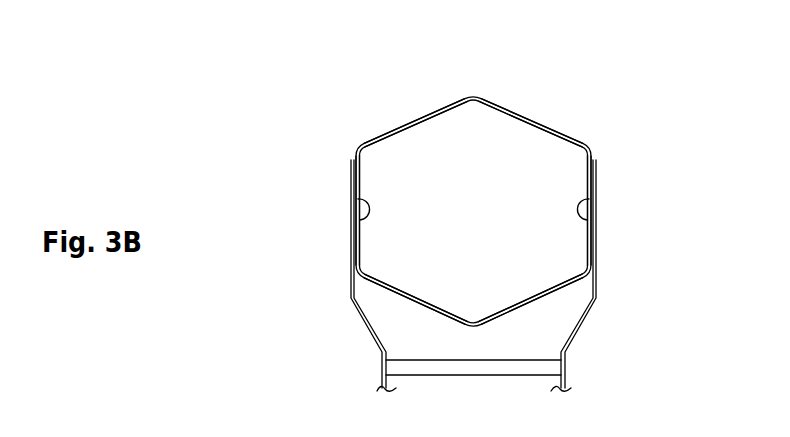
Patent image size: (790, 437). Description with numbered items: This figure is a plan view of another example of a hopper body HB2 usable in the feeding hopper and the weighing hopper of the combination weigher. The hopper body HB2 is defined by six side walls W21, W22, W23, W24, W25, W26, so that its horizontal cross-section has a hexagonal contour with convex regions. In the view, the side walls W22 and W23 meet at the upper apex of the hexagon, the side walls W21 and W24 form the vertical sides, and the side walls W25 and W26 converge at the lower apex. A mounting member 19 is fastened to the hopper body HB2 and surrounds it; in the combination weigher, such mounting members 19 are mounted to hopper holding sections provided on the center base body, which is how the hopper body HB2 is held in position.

The hopper body HB2 is at (498, 103).
The side wall W21 is at (576, 219).
The side wall W22 is at (548, 121).
The side wall W23 is at (408, 122).
The side wall W24 is at (372, 217).
The side wall W25 is at (410, 302).
The side wall W26 is at (533, 302).
The mounting member 19 is at (369, 332).